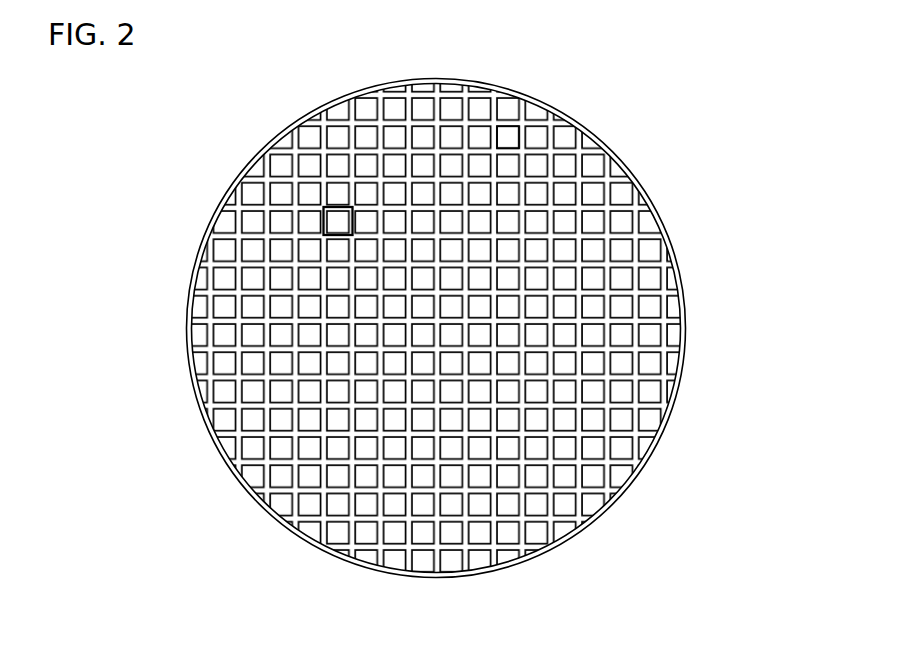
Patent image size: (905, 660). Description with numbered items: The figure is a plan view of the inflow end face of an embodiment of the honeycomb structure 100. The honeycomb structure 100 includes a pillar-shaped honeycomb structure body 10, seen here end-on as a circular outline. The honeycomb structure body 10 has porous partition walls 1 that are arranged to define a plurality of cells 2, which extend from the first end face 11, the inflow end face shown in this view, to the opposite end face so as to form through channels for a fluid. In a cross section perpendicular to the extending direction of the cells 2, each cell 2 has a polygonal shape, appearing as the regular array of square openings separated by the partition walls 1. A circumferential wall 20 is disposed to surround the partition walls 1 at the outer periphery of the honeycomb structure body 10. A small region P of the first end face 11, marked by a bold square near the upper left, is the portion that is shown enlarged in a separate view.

The honeycomb structure 100 is at (772, 81).
The honeycomb structure body 10 is at (698, 337).
The circumferential wall 20 is at (631, 484).
The first end face 11 is at (256, 155).
The partition walls 1 is at (410, 132).
The cells 2 is at (512, 137).
The region P is at (323, 221).